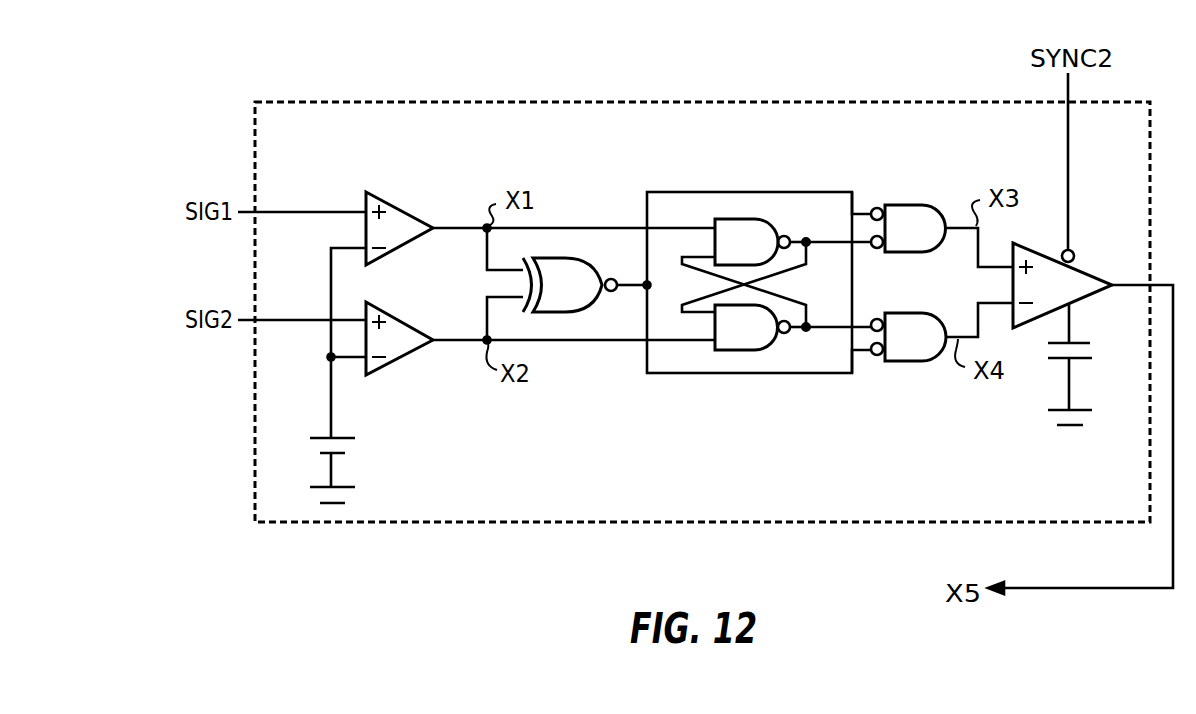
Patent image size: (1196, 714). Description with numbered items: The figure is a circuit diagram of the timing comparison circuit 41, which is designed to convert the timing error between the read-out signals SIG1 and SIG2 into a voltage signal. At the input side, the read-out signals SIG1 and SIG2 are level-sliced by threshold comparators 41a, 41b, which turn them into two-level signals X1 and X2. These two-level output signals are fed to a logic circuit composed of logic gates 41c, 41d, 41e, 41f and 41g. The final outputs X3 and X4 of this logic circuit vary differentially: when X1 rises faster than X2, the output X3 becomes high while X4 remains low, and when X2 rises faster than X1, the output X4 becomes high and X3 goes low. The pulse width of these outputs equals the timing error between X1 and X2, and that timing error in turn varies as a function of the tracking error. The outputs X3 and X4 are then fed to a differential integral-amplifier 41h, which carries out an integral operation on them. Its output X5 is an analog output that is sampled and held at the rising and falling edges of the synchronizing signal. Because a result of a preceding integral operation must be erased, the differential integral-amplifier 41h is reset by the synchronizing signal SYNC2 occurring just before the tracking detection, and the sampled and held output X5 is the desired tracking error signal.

The timing comparison circuit 41 is at (410, 522).
The threshold comparator 41a is at (397, 202).
The threshold comparator 41b is at (415, 360).
The logic gate 41c is at (560, 257).
The logic gate 41d is at (730, 219).
The logic gate 41e is at (745, 350).
The logic gate 41f is at (905, 205).
The logic gate 41g is at (905, 362).
The differential integral-amplifier 41h is at (1088, 246).